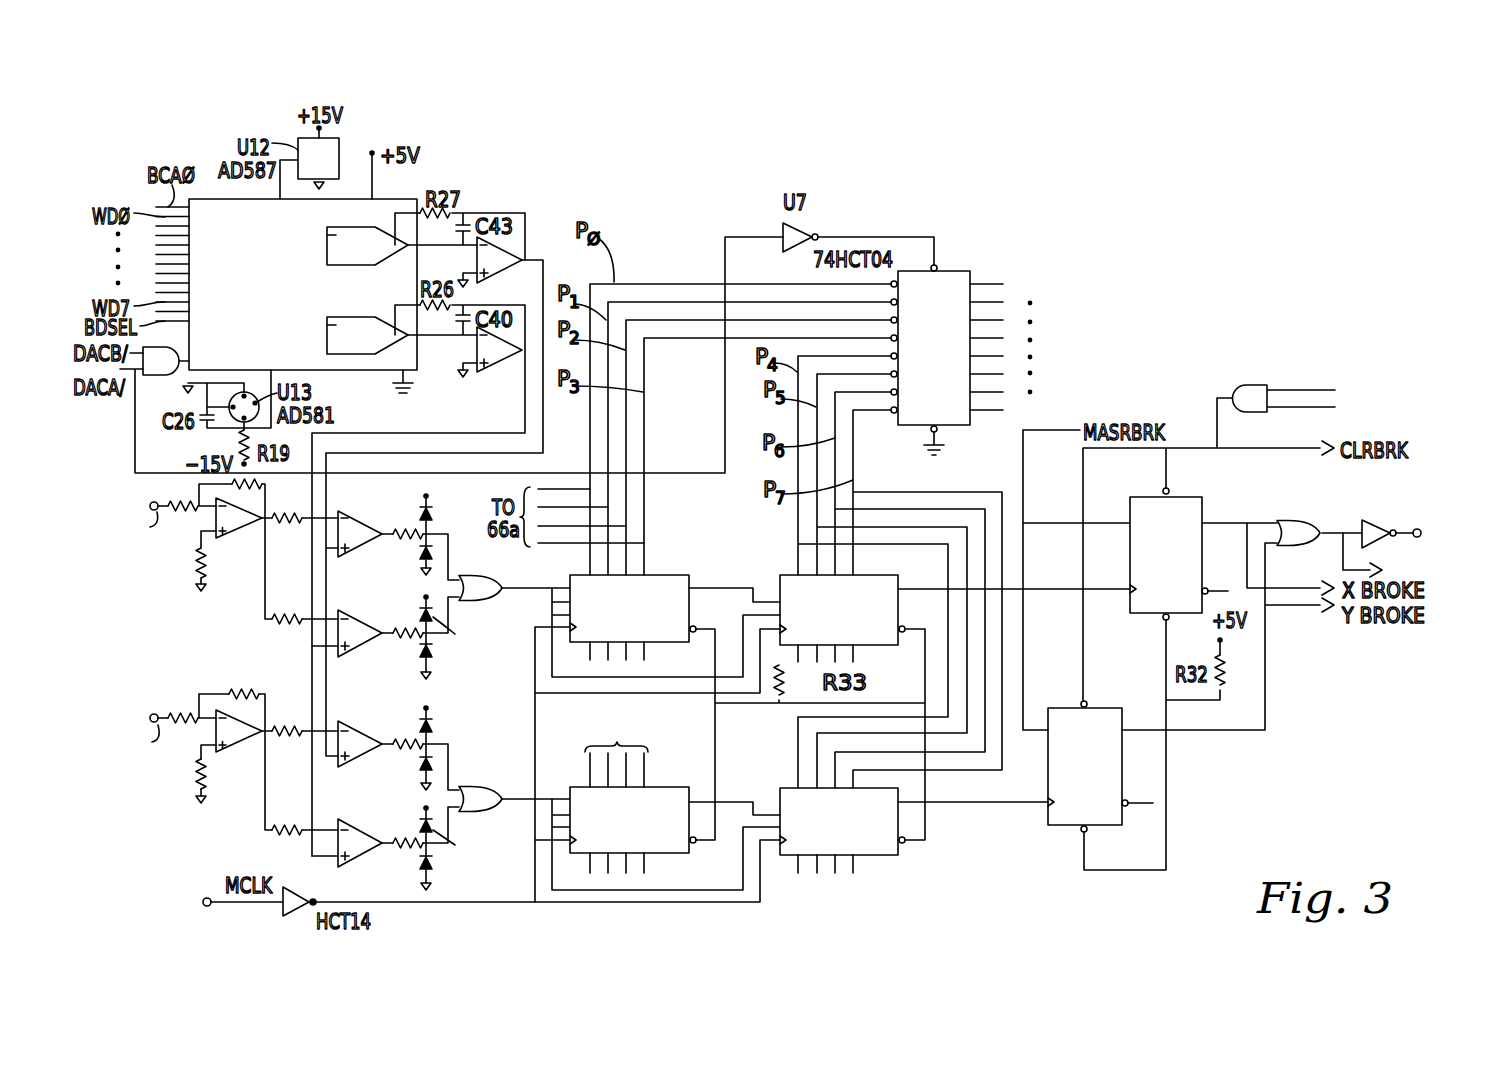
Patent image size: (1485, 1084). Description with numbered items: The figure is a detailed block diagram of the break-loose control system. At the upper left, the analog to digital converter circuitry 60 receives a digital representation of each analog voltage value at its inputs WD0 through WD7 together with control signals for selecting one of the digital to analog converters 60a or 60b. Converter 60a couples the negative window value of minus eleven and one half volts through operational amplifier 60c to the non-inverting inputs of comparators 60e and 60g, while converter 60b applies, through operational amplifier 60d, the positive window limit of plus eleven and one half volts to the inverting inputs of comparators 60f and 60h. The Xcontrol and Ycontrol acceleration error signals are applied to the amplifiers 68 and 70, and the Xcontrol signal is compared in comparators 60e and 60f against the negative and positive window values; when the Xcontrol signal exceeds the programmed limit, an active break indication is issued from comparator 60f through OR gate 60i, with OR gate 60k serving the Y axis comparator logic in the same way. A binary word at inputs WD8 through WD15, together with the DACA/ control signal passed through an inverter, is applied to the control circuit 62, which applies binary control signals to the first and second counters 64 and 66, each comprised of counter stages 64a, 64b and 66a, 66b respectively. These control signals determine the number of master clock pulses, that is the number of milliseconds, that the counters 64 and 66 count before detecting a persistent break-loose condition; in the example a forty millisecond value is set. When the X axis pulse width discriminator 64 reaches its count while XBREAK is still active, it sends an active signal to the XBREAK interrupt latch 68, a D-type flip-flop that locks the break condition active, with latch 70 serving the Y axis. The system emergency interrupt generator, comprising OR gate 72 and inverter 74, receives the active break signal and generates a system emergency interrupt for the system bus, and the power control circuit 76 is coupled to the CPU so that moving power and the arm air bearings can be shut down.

The analog to digital converter circuitry 60 is at (253, 268).
The digital to analog converter 60a is at (330, 238).
The digital to analog converter 60b is at (330, 327).
The operational amplifier 60c is at (496, 265).
The operational amplifier 60d is at (495, 357).
The comparator 60e is at (356, 543).
The comparator 60f is at (358, 642).
The comparator 60g is at (362, 757).
The comparator 60h is at (362, 855).
The OR gate 60i is at (466, 575).
The OR gate 60k is at (468, 786).
The control circuit 62 is at (953, 274).
The first counter 64 is at (743, 573).
The counter stage 64a is at (582, 575).
The counter stage 64b is at (875, 643).
The second counter 66 is at (760, 789).
The counter stage 66a is at (582, 787).
The counter stage 66b is at (880, 853).
The amplifier / XBREAK interrupt latch 68 is at (214, 520).
The amplifier / interrupt latch 70 is at (214, 733).
The OR gate 72 is at (1285, 546).
The inverter 74 is at (1387, 527).
The power control circuit 76 is at (1233, 390).